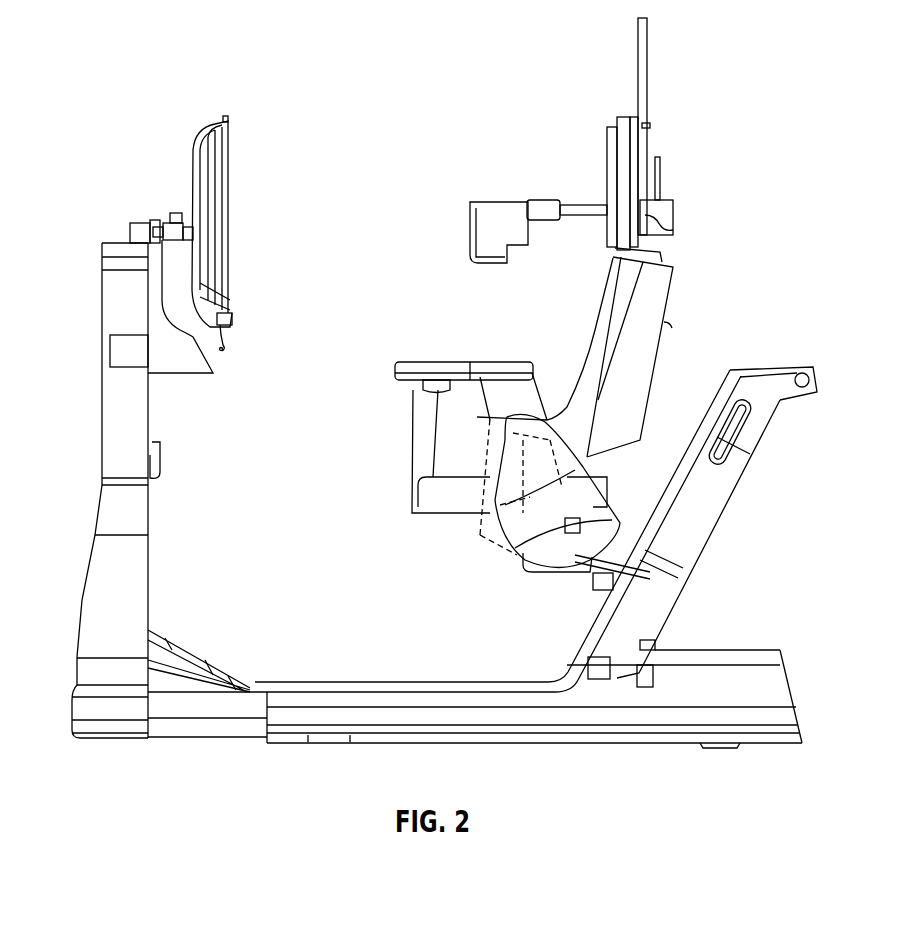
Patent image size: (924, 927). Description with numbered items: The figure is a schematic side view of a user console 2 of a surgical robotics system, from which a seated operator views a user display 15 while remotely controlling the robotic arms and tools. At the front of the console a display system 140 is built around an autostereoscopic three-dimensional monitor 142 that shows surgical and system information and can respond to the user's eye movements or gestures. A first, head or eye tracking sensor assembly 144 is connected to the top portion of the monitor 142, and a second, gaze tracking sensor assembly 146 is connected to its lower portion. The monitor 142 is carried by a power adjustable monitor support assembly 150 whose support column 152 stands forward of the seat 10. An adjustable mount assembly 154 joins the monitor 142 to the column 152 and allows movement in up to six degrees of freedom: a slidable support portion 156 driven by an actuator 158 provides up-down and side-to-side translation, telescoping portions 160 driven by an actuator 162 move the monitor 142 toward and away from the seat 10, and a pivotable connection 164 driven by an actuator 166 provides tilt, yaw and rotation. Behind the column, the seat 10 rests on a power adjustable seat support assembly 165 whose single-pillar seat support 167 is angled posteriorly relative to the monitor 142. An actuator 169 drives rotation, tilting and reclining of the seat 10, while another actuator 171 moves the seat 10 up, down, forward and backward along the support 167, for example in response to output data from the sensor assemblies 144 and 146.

The user console 2 is at (702, 86).
The seat 10 is at (680, 262).
The user display 15 is at (228, 197).
The display system 140 is at (212, 217).
The monitor 142 is at (195, 147).
The first sensor assembly 144 is at (226, 118).
The second sensor assembly 146 is at (224, 348).
The monitor support assembly 150 is at (133, 449).
The support column 152 is at (100, 460).
The adjustable mount assembly 154 is at (115, 276).
The slidable support portion 156 is at (160, 378).
The actuator 158 is at (127, 347).
The telescoping portion 160 is at (215, 300).
The actuator 162 is at (130, 230).
The pivotable connection 164 is at (178, 212).
The actuator 166 is at (163, 225).
The seat support assembly 165 is at (633, 527).
The seat support 167 is at (715, 507).
The actuator 169 is at (523, 547).
The actuator 171 is at (603, 655).